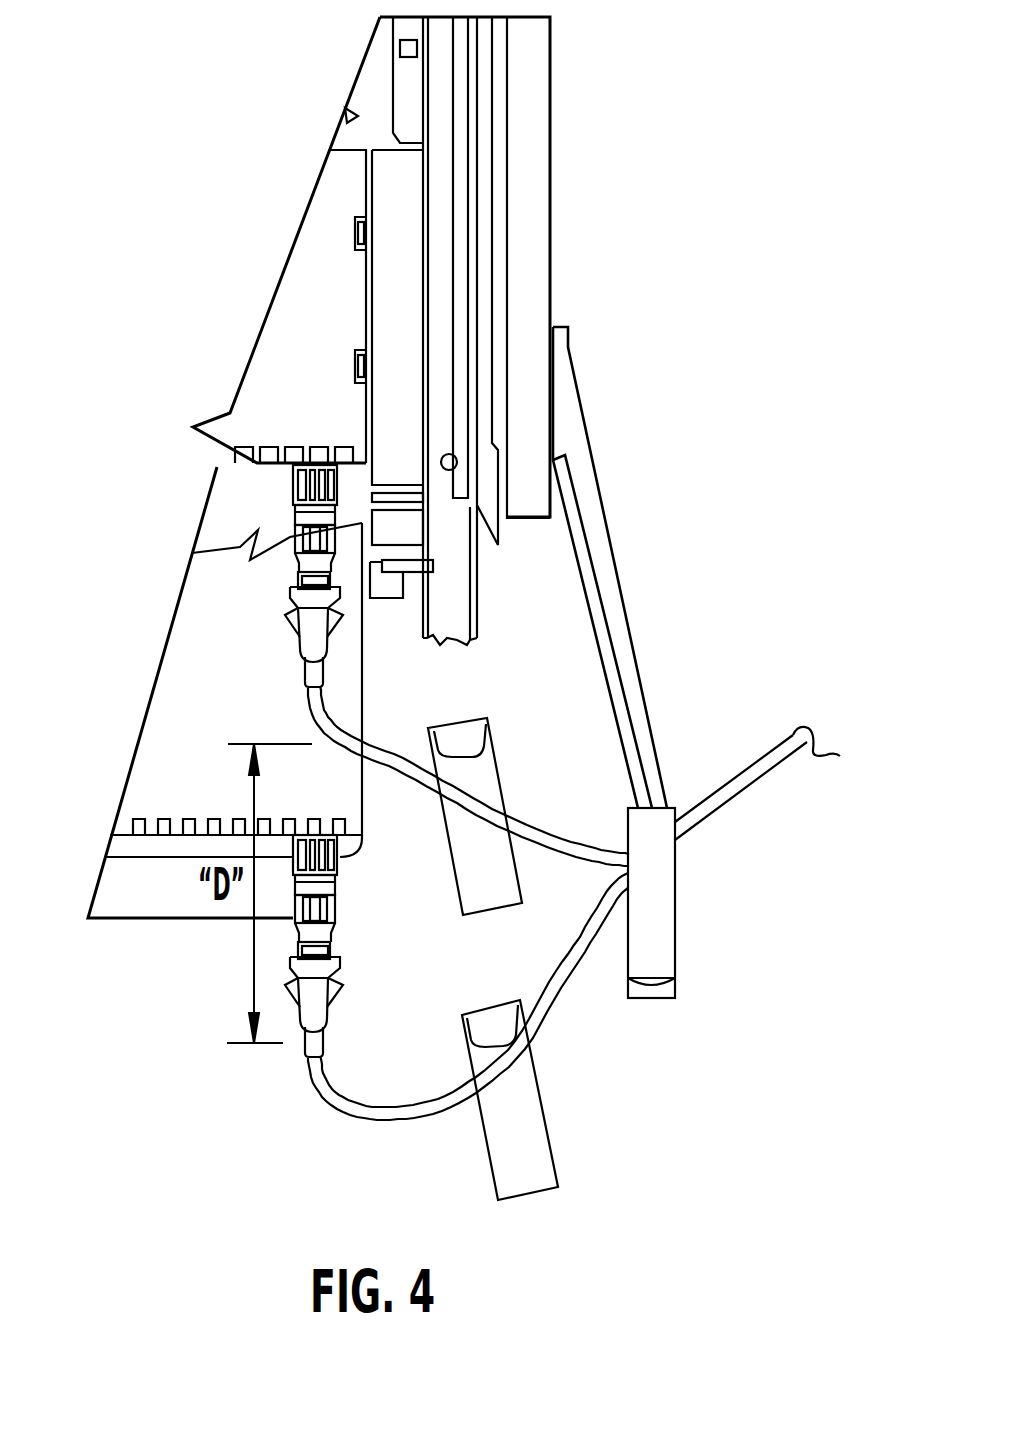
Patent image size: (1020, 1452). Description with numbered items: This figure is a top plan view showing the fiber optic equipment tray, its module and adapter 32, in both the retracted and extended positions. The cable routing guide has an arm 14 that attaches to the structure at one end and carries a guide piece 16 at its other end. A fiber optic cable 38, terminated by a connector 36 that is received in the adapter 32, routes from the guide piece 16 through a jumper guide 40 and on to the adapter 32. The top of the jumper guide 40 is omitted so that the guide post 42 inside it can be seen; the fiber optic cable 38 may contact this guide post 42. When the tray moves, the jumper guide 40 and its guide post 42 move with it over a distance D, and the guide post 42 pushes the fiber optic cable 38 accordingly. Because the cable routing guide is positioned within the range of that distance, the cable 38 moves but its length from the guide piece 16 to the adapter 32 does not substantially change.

The arm 14 is at (580, 378).
The guide piece 16 is at (677, 920).
The adapter 32 is at (290, 488).
The connector 36 is at (290, 598).
The fiber optic cable 38 is at (737, 773).
The jumper guide 40 is at (467, 718).
The guide post 42 is at (490, 735).